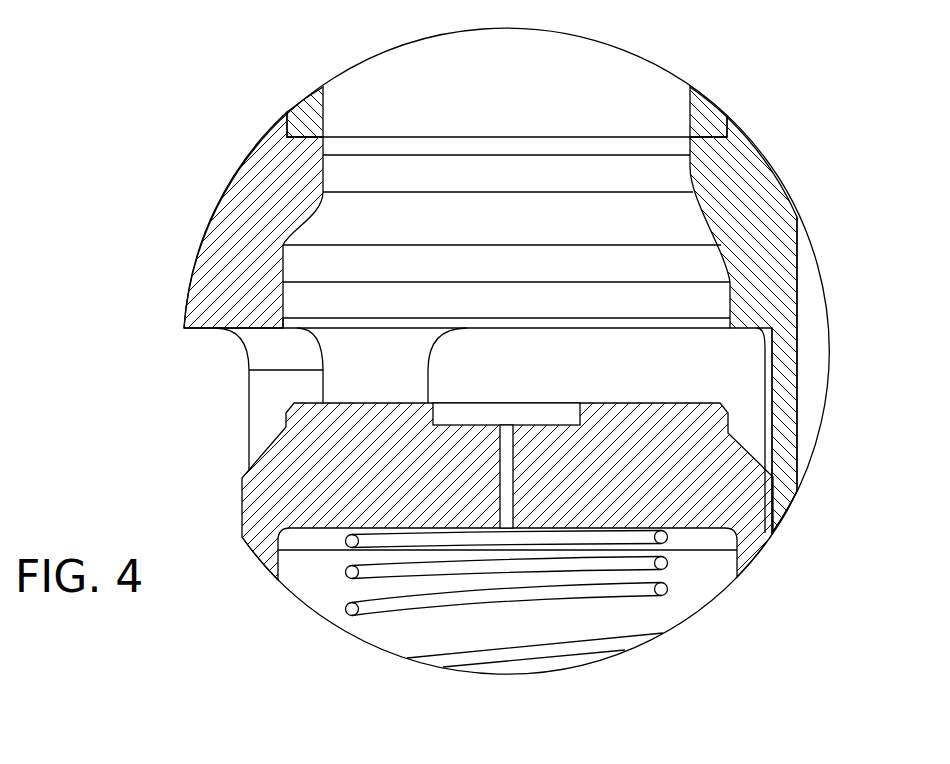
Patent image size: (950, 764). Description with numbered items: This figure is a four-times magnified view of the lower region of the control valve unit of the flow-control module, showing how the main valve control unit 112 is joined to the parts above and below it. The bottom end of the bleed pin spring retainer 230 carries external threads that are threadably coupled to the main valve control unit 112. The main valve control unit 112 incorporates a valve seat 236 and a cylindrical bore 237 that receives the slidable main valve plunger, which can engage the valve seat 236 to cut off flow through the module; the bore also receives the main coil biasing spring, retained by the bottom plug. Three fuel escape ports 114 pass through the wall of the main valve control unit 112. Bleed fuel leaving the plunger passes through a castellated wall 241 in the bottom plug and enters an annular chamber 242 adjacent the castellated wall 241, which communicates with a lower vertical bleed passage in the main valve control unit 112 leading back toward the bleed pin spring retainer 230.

The main valve control unit 112 is at (265, 222).
The fuel escape ports 114 is at (249, 383).
The bleed pin spring retainer 230 is at (287, 112).
The valve seat 236 is at (277, 320).
The cylindrical bore 237 is at (778, 503).
The castellated wall 241 is at (498, 466).
The annular chamber 242 is at (597, 597).